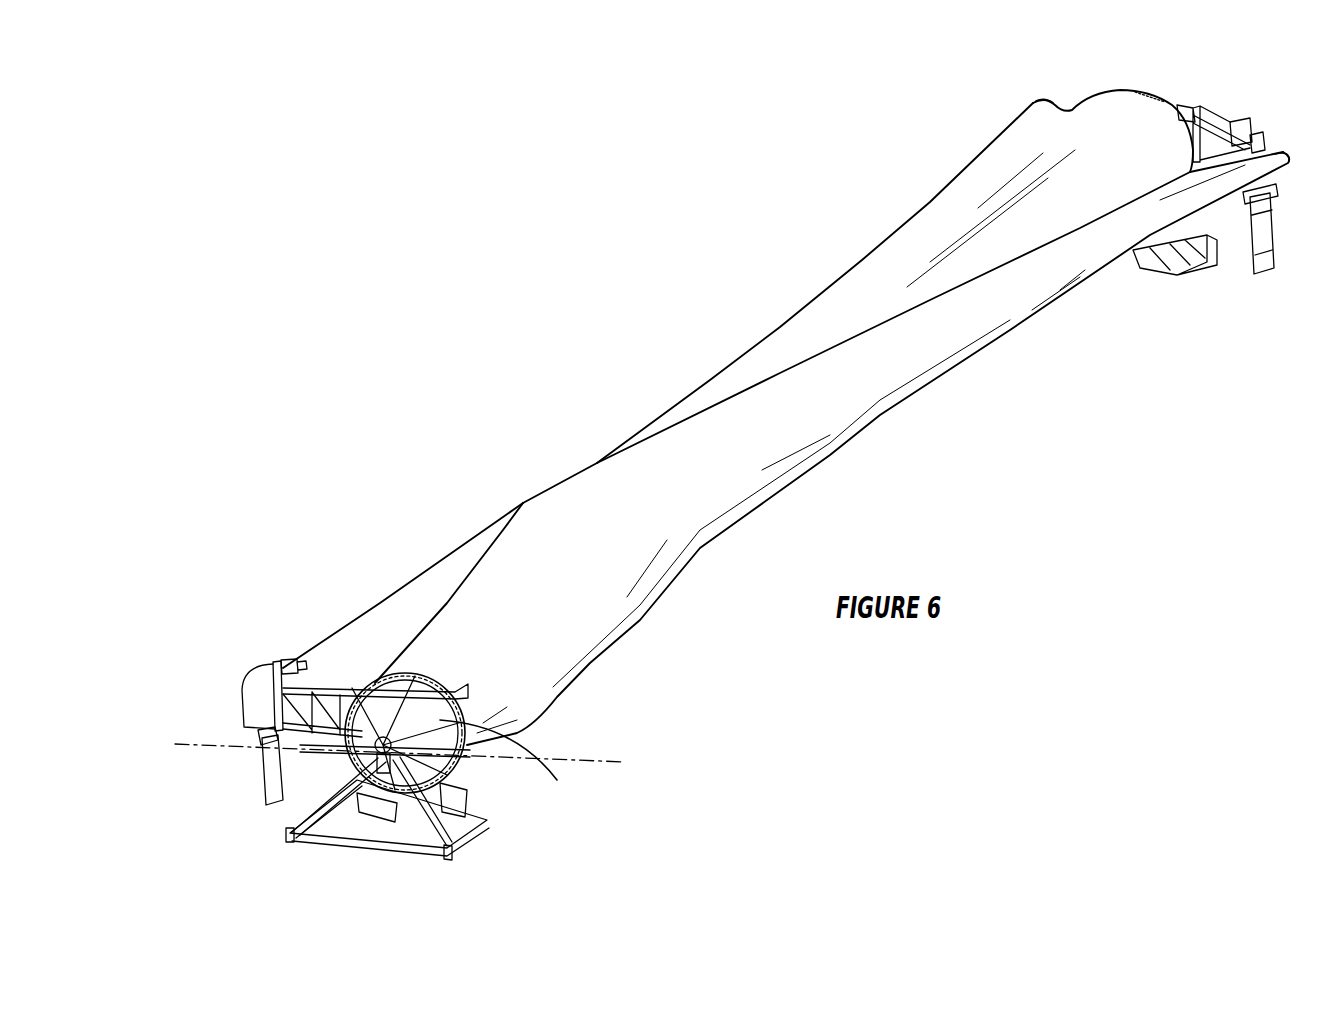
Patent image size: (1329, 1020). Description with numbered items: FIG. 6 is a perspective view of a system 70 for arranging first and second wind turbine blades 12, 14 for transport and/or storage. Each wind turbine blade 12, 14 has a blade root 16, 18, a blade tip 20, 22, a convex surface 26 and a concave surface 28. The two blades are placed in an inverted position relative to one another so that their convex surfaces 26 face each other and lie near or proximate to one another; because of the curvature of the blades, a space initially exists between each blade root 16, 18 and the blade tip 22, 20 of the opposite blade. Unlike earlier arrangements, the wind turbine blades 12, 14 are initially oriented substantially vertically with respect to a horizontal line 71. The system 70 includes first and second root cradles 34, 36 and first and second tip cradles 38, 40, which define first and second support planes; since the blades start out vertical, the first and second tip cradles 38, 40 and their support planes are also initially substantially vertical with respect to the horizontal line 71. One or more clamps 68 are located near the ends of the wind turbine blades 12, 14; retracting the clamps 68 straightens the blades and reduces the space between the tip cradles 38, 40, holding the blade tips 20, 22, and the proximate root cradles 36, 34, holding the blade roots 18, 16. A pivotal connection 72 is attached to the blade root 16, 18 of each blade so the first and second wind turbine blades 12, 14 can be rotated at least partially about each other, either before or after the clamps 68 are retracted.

The first wind turbine blade 12 is at (786, 424).
The second wind turbine blade 14 is at (1113, 131).
The blade root 16 is at (508, 766).
The blade root 18 is at (1078, 82).
The blade tip 20 is at (1290, 111).
The blade tip 22 is at (302, 653).
The convex surface 26 is at (1046, 230).
The concave surface 28 is at (743, 526).
The first root cradle 34 is at (400, 780).
The second root cradle 36 is at (1173, 312).
The first tip cradle 38 is at (1227, 235).
The second tip cradle 40 is at (328, 610).
The clamp 68 is at (742, 457).
The system 70 is at (635, 340).
The horizontal line 71 is at (408, 726).
The pivotal connection 72 is at (339, 823).